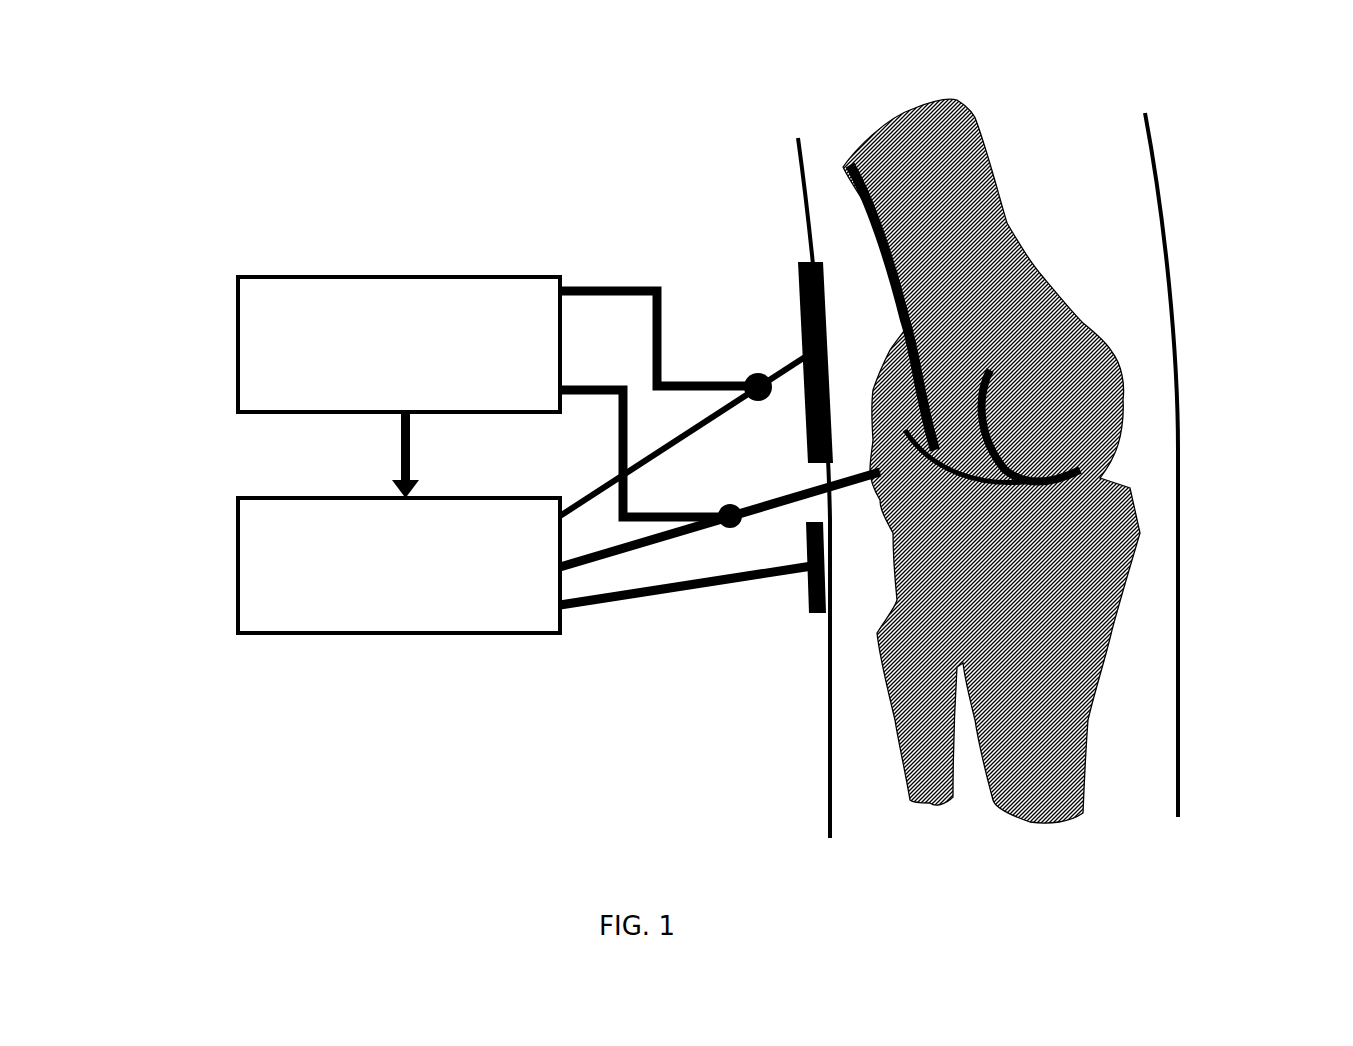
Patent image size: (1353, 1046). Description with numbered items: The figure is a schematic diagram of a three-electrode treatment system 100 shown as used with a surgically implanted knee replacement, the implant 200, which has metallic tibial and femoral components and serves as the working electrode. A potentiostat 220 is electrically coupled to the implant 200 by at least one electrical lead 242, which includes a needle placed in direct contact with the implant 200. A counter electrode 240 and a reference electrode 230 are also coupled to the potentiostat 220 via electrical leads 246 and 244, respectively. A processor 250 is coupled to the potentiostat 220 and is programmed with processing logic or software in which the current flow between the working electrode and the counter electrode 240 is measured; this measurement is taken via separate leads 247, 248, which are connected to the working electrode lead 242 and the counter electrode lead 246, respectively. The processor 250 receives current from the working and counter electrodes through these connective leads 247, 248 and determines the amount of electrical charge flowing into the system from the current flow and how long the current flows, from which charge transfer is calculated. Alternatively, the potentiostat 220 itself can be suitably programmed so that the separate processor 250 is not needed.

The three-electrode treatment system 100 is at (130, 85).
The implant 200 is at (1210, 500).
The potentiostat 220 is at (237, 598).
The reference electrode 230 is at (813, 608).
The counter electrode 240 is at (797, 292).
The electrical lead 242 is at (774, 513).
The electrical lead 244 is at (670, 593).
The electrical lead 246 is at (586, 497).
The lead 247 is at (598, 385).
The lead 248 is at (630, 287).
The processor 250 is at (237, 338).